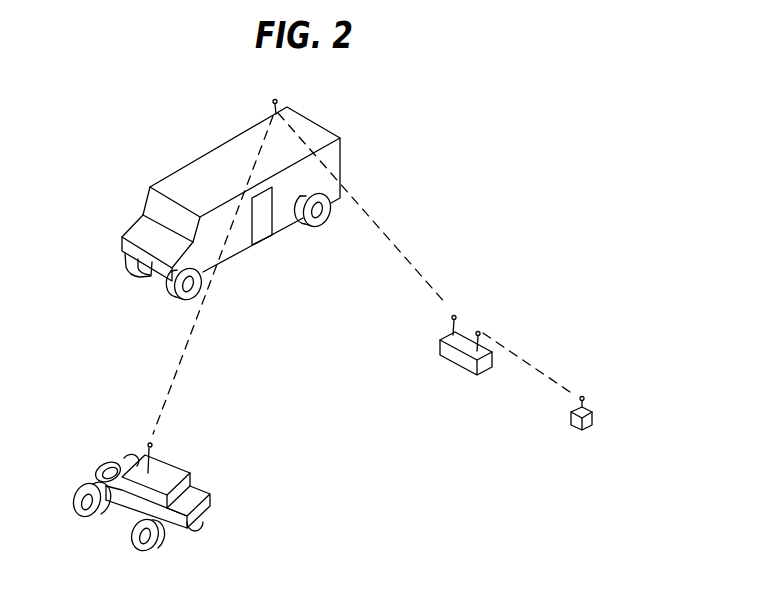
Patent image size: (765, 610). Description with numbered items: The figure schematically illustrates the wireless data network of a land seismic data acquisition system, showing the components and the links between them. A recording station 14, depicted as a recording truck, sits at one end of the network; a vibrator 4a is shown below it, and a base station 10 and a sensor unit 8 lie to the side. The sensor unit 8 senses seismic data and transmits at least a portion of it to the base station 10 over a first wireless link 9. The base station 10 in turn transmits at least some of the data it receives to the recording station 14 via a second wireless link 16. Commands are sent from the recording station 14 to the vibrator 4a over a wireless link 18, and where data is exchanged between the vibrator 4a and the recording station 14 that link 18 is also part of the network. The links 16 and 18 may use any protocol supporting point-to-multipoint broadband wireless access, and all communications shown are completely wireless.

The recording station 14 is at (138, 223).
The wireless links 18 is at (185, 347).
The second wireless links 16 is at (382, 228).
The first wireless links 9 is at (530, 363).
The base station 10 is at (440, 343).
The sensor unit 8 is at (593, 418).
The vibrator 4a is at (212, 502).